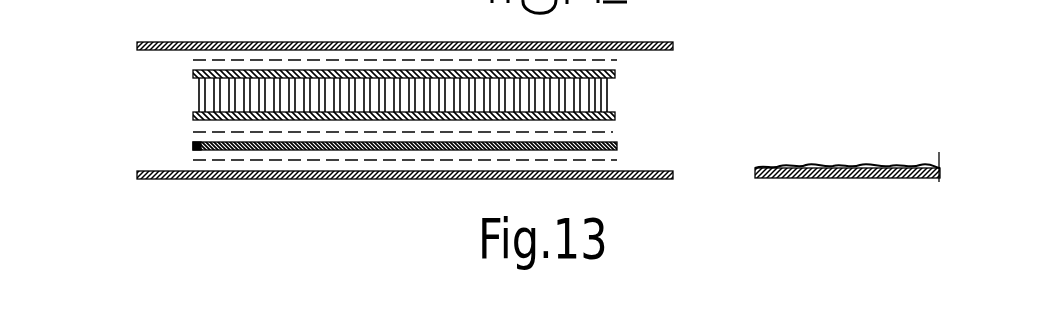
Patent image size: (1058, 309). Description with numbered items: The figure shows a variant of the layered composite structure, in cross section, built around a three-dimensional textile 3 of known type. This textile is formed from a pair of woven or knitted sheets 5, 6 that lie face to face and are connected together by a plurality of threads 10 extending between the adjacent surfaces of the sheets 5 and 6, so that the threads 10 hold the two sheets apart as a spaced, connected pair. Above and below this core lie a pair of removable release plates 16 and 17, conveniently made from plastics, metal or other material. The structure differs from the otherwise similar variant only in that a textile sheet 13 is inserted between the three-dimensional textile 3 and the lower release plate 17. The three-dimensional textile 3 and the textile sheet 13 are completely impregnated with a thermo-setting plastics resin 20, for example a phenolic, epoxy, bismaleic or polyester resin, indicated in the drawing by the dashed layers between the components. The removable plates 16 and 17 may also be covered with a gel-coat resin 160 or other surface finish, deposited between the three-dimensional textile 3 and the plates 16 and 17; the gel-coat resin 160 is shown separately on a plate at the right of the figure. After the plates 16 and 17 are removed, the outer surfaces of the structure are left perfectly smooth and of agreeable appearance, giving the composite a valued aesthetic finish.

The three-dimensional textile 3 is at (393, 97).
The woven or knitted sheet 5 is at (615, 73).
The woven or knitted sheet 6 is at (615, 117).
The threads 10 is at (603, 97).
The textile sheet 13 is at (193, 146).
The plate 16 is at (627, 42).
The lower release plate 17 is at (648, 179).
The thermo-setting plastics resin 20 is at (267, 62).
The gel-coat resin 160 is at (804, 158).